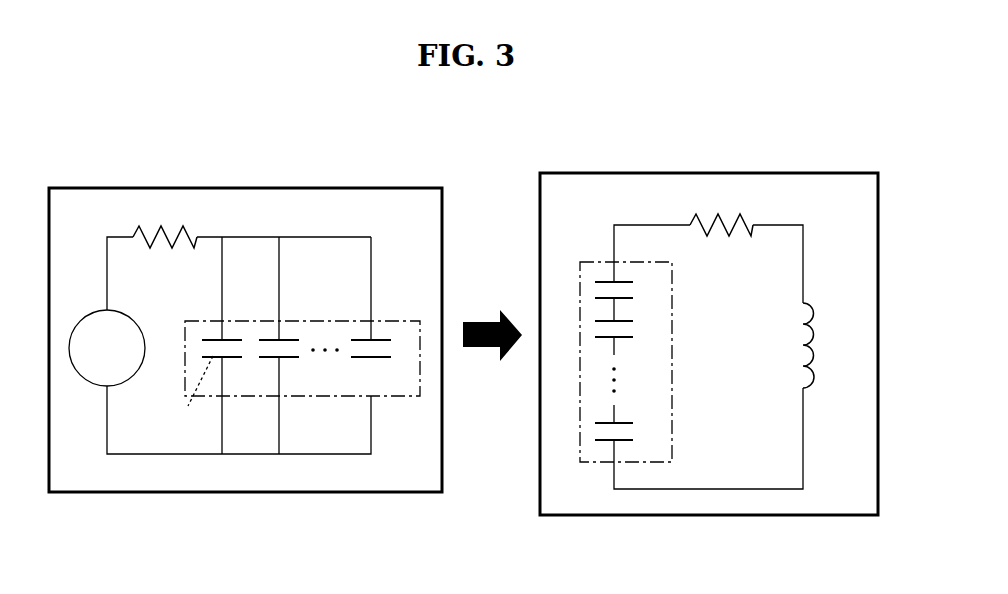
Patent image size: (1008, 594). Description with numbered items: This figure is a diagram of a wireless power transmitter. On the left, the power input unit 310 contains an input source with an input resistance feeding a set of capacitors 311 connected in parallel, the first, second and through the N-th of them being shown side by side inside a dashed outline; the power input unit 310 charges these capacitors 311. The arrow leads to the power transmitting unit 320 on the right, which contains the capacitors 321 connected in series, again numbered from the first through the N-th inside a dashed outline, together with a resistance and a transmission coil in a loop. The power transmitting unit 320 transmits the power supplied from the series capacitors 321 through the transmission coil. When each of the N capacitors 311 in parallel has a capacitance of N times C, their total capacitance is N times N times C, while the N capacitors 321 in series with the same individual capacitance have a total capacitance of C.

The power input unit 310 is at (245, 304).
The capacitors connected in parallel 311 is at (398, 398).
The power transmitting unit 320 is at (709, 310).
The capacitors connected in series 321 is at (673, 421).